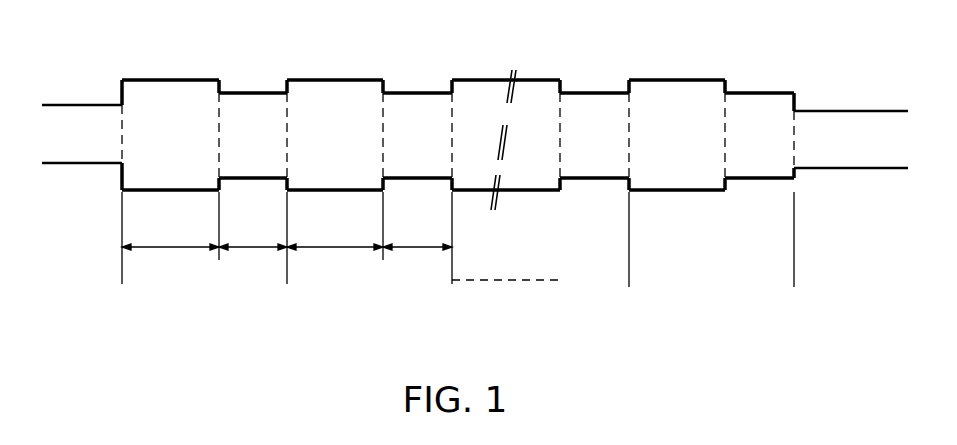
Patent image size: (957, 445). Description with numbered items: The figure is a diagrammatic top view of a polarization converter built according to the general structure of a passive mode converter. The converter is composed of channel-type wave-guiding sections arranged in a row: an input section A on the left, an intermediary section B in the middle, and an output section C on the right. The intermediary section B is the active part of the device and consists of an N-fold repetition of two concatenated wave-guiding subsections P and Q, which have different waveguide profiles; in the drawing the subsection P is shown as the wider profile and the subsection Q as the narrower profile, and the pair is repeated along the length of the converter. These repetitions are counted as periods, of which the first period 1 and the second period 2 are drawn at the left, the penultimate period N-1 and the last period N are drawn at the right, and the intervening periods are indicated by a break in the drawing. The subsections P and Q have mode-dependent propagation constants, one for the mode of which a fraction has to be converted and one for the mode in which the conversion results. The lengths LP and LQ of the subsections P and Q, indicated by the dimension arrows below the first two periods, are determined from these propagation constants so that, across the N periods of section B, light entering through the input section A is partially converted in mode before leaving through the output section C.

The input section A is at (82, 134).
The intermediary section B is at (458, 109).
The output section C is at (851, 139).
The wave-guiding subsection P is at (423, 140).
The wave-guiding subsection Q is at (793, 73).
The length of subsection P LP is at (252, 232).
The length of subsection Q LQ is at (335, 232).
The first period 1 is at (287, 283).
The second period 2 is at (452, 283).
The (N-1)th period N-1 is at (629, 287).
The Nth period N is at (629, 287).